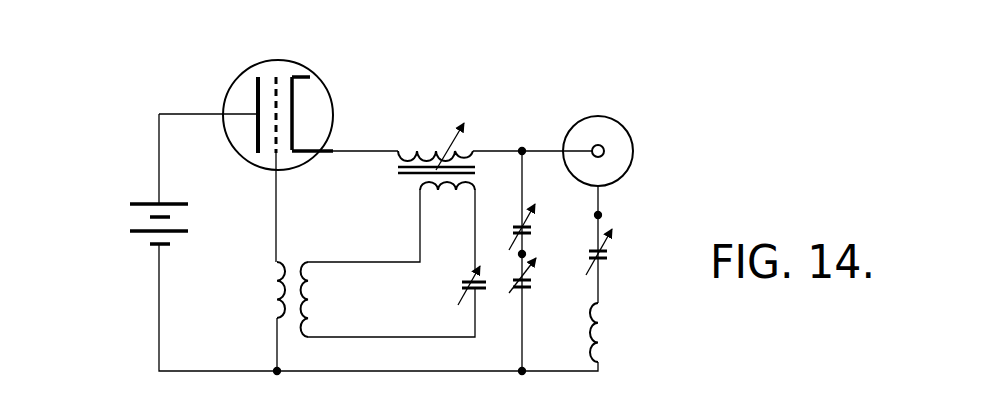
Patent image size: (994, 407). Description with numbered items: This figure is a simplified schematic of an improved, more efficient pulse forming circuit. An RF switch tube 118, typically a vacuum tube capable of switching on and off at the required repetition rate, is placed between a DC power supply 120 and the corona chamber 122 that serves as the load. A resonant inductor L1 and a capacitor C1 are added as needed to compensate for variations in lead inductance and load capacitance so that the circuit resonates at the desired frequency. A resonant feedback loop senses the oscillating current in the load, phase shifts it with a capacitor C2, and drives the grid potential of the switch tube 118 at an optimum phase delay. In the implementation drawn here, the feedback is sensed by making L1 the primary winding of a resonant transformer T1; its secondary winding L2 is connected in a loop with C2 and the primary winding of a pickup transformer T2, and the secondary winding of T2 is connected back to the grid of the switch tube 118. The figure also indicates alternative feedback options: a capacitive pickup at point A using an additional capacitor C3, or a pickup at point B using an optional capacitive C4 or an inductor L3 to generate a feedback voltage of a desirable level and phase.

The RF switch tube 118 is at (302, 63).
The DC power supply 120 is at (126, 217).
The corona chamber 122 is at (598, 117).
The resonant transformer T1 is at (391, 179).
The resonant inductor L1 is at (418, 166).
The secondary winding L2 is at (413, 188).
The capacitor C2 is at (397, 290).
The pickup transformer T2 is at (300, 256).
The point A is at (510, 263).
The capacitor C1 is at (540, 223).
The additional capacitor C3 is at (531, 286).
The point B is at (610, 211).
The optional capacitive C4 is at (614, 257).
The inductor L3 is at (613, 332).